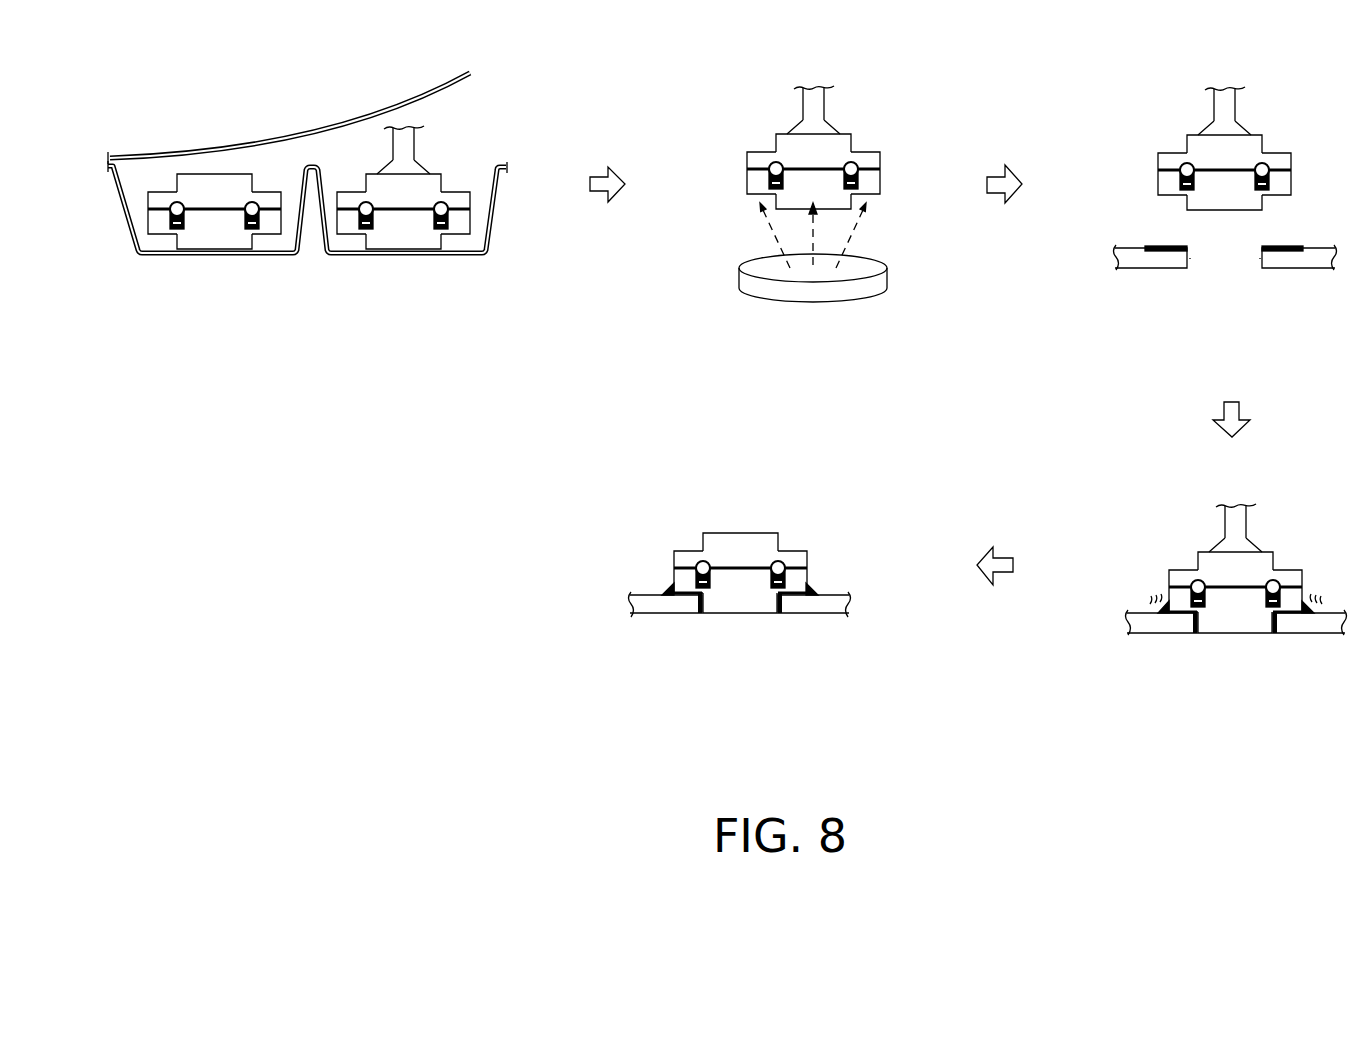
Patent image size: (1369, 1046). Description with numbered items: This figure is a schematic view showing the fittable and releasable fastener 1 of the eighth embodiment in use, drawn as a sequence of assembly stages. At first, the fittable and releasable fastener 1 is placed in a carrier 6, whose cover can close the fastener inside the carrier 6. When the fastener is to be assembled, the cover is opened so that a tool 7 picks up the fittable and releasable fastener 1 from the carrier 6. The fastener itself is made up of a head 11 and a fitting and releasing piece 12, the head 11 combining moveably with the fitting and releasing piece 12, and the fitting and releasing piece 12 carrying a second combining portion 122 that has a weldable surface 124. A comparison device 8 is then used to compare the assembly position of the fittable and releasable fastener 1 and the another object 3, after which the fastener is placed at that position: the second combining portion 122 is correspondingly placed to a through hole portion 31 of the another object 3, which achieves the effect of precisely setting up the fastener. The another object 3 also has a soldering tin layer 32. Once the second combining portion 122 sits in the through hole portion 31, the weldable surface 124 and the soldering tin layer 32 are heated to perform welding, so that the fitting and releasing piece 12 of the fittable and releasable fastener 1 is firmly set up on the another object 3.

The fittable and releasable fastener 1 is at (756, 400).
The another object 3 is at (1132, 262).
The carrier 6 is at (327, 124).
The tool 7 is at (408, 140).
The comparison device 8 is at (803, 297).
The head 11 is at (1272, 157).
The fitting and releasing piece 12 is at (1285, 180).
The through hole portion 31 is at (1230, 260).
The soldering tin layer 32 is at (1158, 251).
The second combining portion 122 is at (1213, 204).
The weldable surface 124 is at (1262, 204).